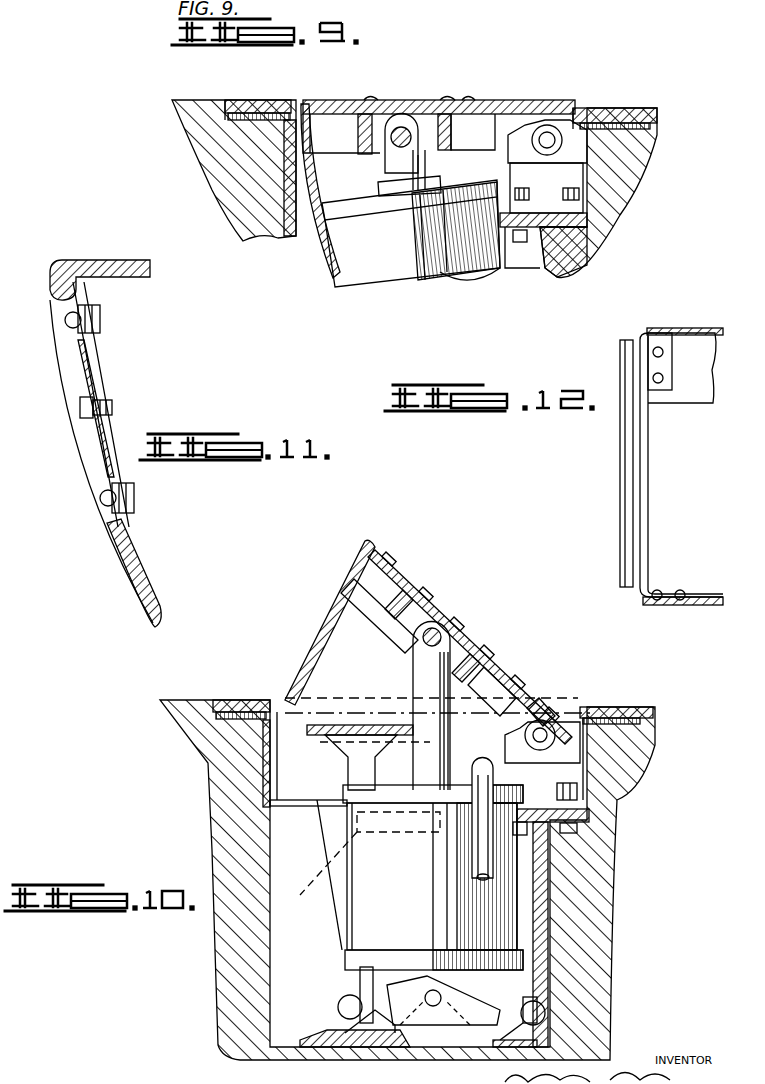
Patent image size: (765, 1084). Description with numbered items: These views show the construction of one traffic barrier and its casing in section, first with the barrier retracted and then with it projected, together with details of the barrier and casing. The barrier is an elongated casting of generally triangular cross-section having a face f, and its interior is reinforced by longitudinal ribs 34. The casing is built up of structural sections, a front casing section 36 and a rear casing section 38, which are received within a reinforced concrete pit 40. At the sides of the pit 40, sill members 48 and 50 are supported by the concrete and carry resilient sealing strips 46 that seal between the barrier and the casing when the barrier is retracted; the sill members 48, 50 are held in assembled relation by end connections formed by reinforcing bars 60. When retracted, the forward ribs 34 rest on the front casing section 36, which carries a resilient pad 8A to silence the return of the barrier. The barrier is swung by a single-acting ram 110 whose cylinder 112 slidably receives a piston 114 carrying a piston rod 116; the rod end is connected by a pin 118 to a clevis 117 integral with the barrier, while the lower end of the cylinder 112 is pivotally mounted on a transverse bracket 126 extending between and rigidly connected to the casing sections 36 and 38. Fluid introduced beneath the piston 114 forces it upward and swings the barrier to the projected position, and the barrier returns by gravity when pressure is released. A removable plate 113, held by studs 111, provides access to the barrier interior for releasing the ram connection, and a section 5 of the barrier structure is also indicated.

In FIG. 9, the structural frame section 5 is at (372, 100).
In FIG. 11, the structural frame section 5 is at (120, 261).
In FIG. 10, the structural frame section 5 is at (437, 602).
In FIG. 10, the rail support plate 8A is at (345, 723).
In FIG. 9, the longitudinal ribs 34 is at (352, 116).
In FIG. 10, the longitudinal ribs 34 is at (418, 586).
In FIG. 10, the front casing section 36 is at (343, 996).
In FIG. 9, the rear casing section 38 is at (598, 257).
In FIG. 10, the rear casing section 38 is at (545, 935).
In FIG. 9, the pit 40 is at (215, 197).
In FIG. 10, the pit 40 is at (220, 811).
In FIG. 9, the sealing strips 46 is at (248, 100).
In FIG. 10, the sealing strips 46 is at (228, 700).
In FIG. 9, the sill member 48 is at (270, 92).
In FIG. 10, the sill member 48 is at (250, 700).
In FIG. 9, the sill member 50 is at (276, 170).
In FIG. 12, the sill member 50 is at (688, 328).
In FIG. 10, the sill member 50 is at (283, 762).
In FIG. 12, the reinforcing bars 60 is at (645, 455).
In FIG. 10, the reinforcing bars 60 is at (310, 803).
In FIG. 9, the ram 110 is at (355, 282).
In FIG. 10, the ram 110 is at (522, 908).
In FIG. 11, the studs 111 is at (113, 407).
In FIG. 9, the cylinder 112 is at (345, 250).
In FIG. 10, the cylinder 112 is at (510, 873).
In FIG. 11, the removable plate 113 is at (94, 374).
In FIG. 10, the piston 114 is at (365, 875).
In FIG. 9, the piston rod 116 is at (416, 173).
In FIG. 10, the piston rod 116 is at (450, 692).
In FIG. 9, the clevis 117 is at (386, 145).
In FIG. 10, the clevis 117 is at (410, 626).
In FIG. 9, the pin 118 is at (405, 122).
In FIG. 10, the pin 118 is at (440, 628).
In FIG. 10, the transverse bracket 126 is at (466, 1011).
In FIG. 9, the face f is at (318, 225).
In FIG. 11, the face f is at (125, 553).
In FIG. 10, the face f is at (333, 598).